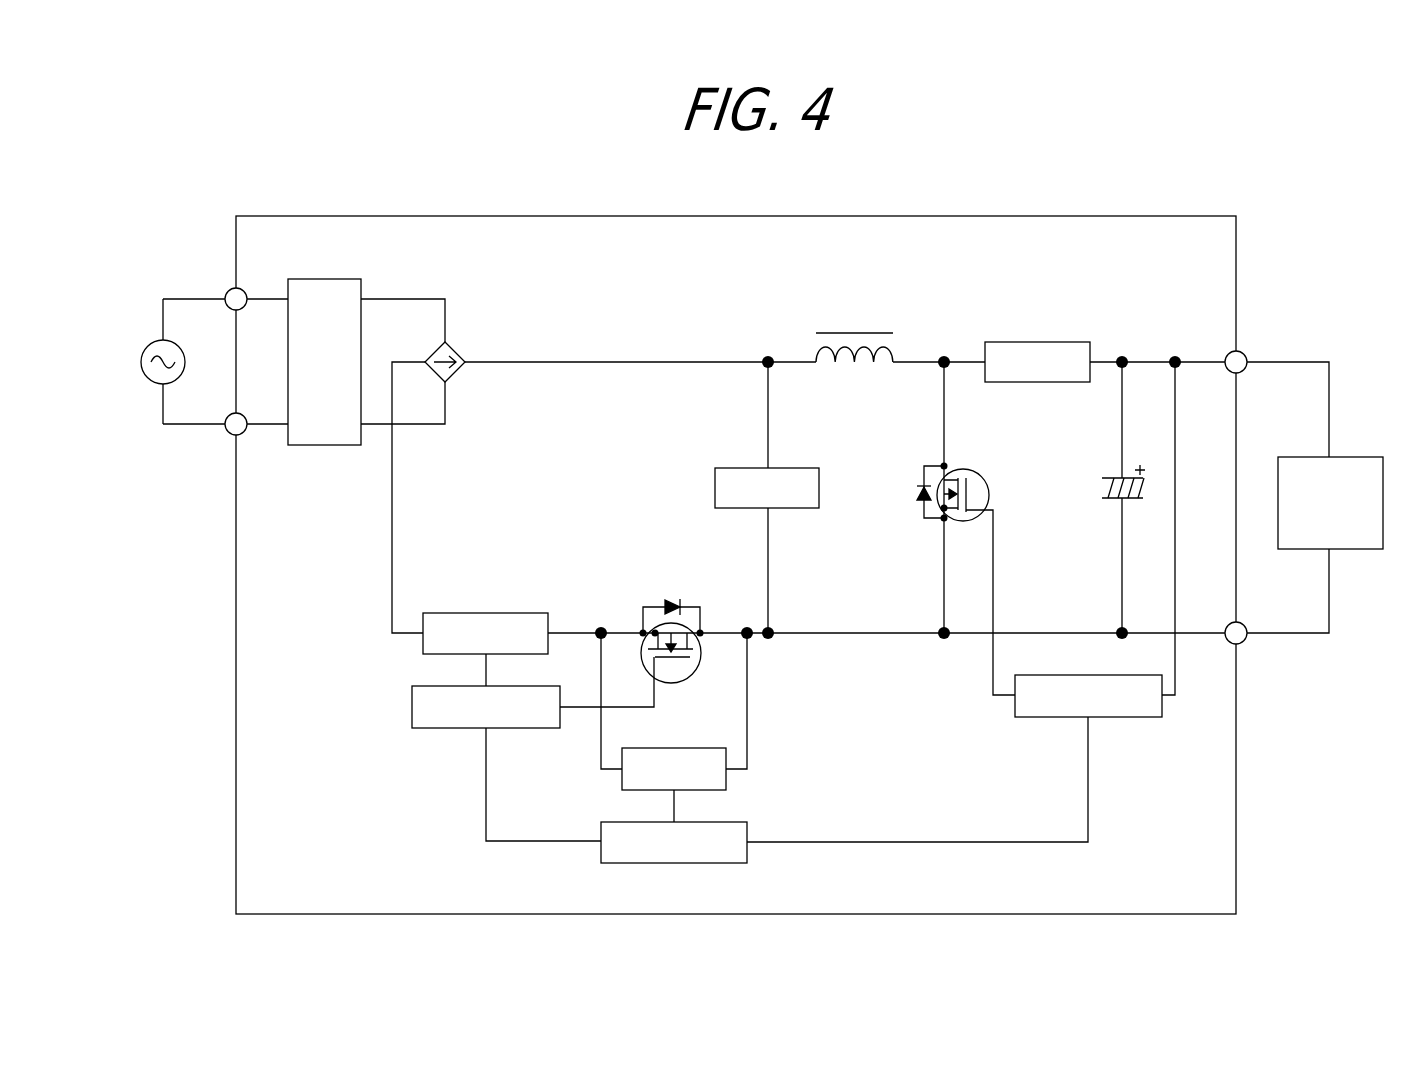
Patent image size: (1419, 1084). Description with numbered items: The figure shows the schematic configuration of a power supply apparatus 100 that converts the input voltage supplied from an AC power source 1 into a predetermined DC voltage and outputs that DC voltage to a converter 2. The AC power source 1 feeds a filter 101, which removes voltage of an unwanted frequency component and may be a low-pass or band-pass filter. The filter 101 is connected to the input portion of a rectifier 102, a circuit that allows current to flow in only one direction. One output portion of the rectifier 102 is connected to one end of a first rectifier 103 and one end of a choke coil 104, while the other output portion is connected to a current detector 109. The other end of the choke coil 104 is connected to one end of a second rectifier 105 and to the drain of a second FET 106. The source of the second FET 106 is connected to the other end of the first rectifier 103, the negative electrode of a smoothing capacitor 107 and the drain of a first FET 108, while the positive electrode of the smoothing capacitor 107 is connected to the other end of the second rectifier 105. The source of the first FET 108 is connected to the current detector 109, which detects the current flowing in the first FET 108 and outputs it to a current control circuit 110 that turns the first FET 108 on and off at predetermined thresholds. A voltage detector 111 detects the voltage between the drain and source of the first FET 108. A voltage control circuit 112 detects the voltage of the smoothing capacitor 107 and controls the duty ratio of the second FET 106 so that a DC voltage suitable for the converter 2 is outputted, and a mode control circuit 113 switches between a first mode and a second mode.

The AC power source 1 is at (146, 347).
The converter 2 is at (1363, 457).
The power supply apparatus 100 is at (1130, 216).
The filter 101 is at (325, 279).
The rectifier 102 is at (460, 346).
The first rectifier 103 is at (792, 468).
The choke coil 104 is at (857, 333).
The second rectifier 105 is at (1037, 342).
The second FET 106 is at (975, 470).
The smoothing capacitor 107 is at (1098, 488).
The first FET 108 is at (700, 607).
The current detector 109 is at (482, 613).
The current control circuit 110 is at (442, 728).
The voltage detector 111 is at (675, 748).
The voltage control circuit 112 is at (1115, 717).
The mode control circuit 113 is at (747, 822).